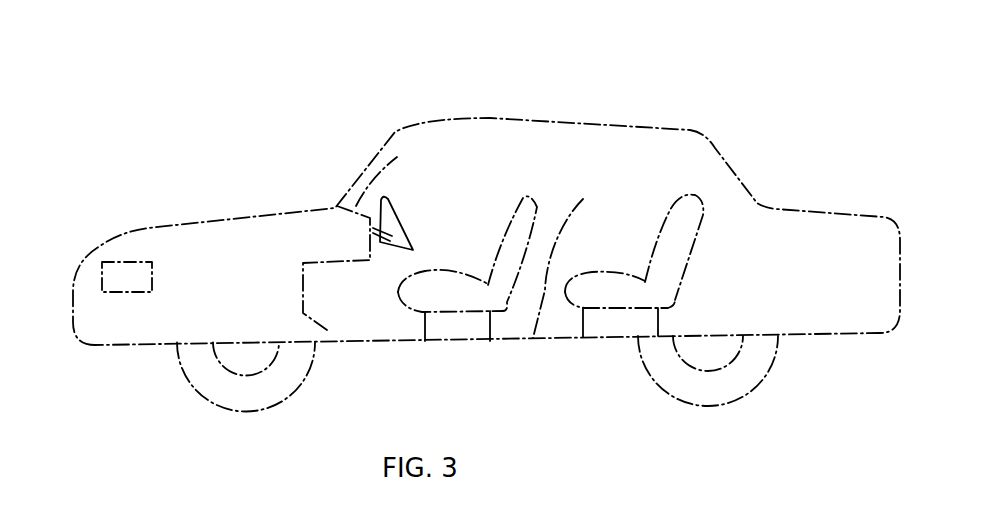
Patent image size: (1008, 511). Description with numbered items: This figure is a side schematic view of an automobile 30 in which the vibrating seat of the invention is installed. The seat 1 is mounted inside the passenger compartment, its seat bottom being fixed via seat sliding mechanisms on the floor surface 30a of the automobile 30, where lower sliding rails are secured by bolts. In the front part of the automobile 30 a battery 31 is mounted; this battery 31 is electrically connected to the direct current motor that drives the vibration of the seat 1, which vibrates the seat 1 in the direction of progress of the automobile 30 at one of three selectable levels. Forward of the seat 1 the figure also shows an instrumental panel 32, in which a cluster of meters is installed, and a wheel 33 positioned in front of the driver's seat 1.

The automobile 30 is at (715, 150).
The floor surface 30a is at (579, 251).
The battery 31 is at (152, 262).
The instrumental panel 32 is at (398, 171).
The wheel 33 is at (403, 228).
The seat 1 is at (527, 197).